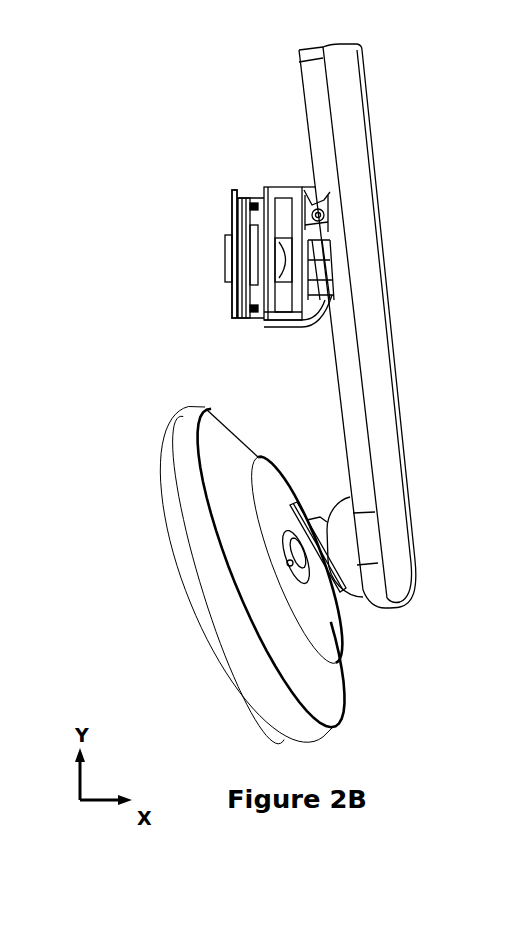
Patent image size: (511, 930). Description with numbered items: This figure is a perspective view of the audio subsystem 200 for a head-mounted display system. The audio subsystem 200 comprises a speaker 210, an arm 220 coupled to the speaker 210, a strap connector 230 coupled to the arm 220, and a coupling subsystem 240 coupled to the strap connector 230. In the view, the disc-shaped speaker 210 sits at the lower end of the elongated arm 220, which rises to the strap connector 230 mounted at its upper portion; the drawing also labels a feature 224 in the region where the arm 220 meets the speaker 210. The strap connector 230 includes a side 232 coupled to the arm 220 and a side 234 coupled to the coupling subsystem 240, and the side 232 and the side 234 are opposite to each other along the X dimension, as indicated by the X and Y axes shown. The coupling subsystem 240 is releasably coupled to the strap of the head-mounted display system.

The audio subsystem 200 is at (175, 84).
The speaker 210 is at (327, 697).
The arm 220 is at (357, 137).
The pivot knob 224 is at (352, 554).
The strap connector 230 is at (294, 197).
The side 232 is at (324, 312).
The side 234 is at (262, 324).
The coupling subsystem 240 is at (257, 190).